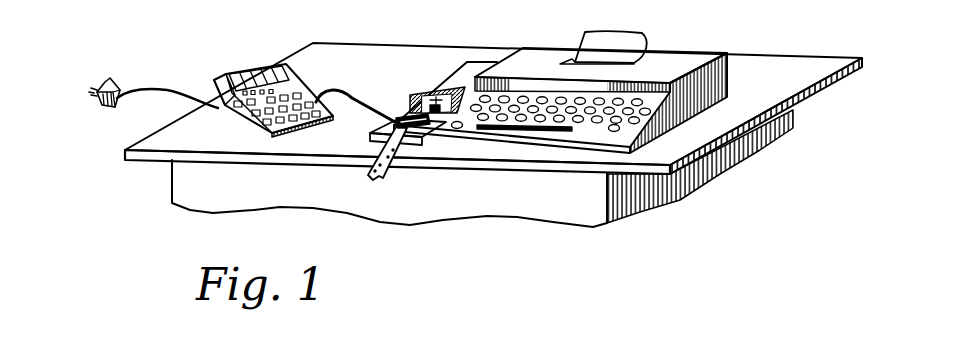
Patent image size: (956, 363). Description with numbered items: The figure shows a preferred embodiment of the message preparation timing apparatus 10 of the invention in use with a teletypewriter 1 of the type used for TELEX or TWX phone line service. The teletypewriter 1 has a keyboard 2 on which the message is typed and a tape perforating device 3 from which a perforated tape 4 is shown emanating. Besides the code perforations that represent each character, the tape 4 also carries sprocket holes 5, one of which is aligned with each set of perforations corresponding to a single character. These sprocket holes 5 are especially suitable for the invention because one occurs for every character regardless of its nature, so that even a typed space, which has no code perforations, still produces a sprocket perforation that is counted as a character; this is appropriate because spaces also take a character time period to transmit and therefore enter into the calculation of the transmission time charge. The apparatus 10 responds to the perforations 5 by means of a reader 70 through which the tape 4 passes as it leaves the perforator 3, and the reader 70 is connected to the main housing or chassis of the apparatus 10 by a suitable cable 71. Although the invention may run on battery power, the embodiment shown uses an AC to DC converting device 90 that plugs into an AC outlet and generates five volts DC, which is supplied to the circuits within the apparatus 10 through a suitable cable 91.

The teletypewriter 1 is at (667, 60).
The keyboard 2 is at (580, 121).
The tape perforating device 3 is at (460, 83).
The tape 4 is at (368, 161).
The sprocket holes 5 is at (385, 172).
The message preparation timing apparatus 10 is at (252, 60).
The reader 70 is at (432, 113).
The cable 71 is at (374, 104).
The AC to DC converting device 90 is at (118, 80).
The cable 91 is at (168, 97).